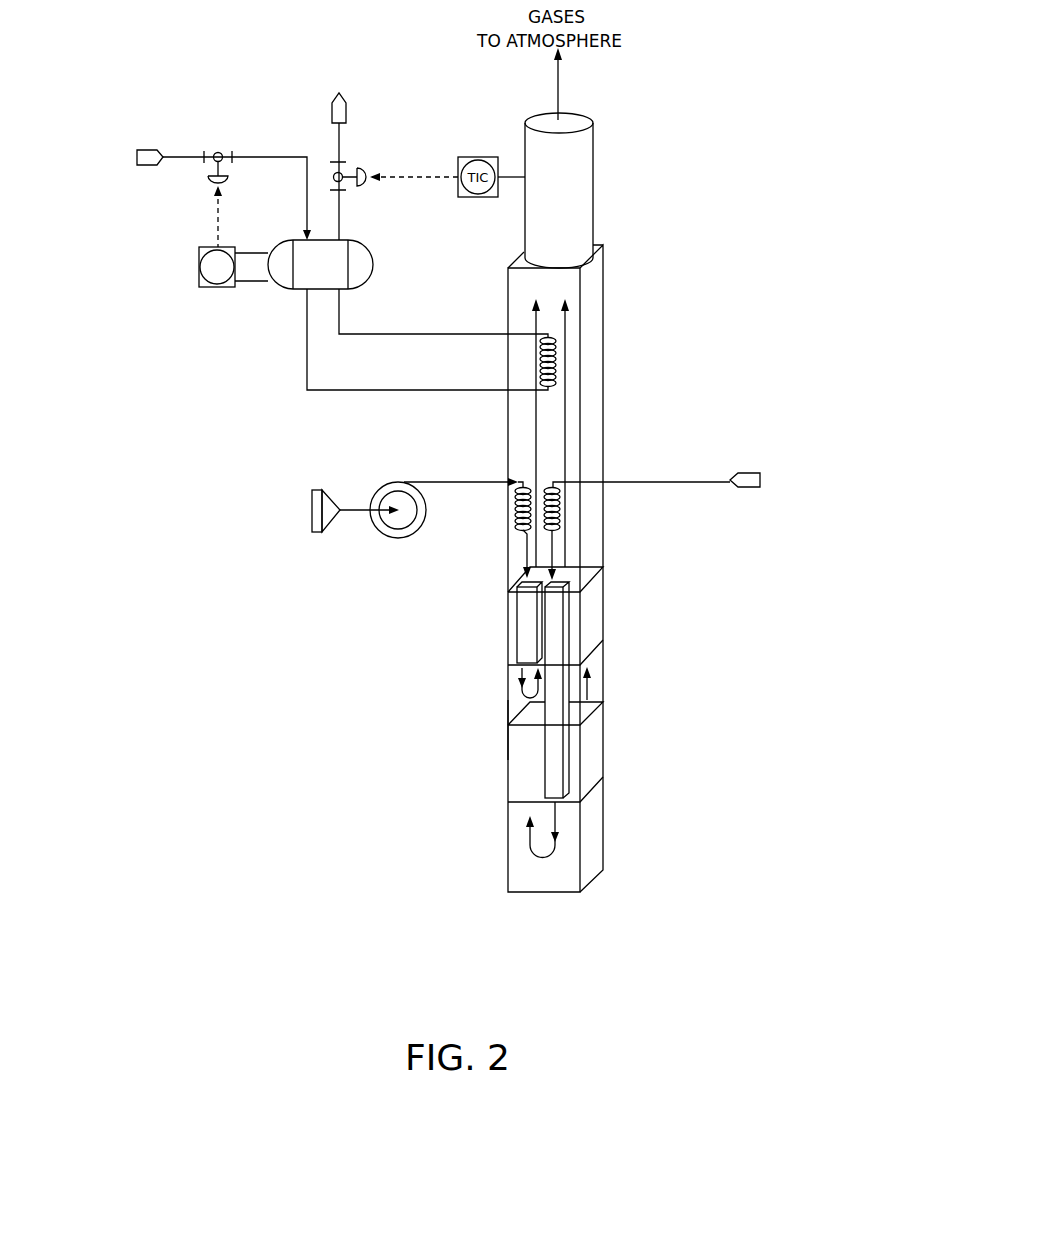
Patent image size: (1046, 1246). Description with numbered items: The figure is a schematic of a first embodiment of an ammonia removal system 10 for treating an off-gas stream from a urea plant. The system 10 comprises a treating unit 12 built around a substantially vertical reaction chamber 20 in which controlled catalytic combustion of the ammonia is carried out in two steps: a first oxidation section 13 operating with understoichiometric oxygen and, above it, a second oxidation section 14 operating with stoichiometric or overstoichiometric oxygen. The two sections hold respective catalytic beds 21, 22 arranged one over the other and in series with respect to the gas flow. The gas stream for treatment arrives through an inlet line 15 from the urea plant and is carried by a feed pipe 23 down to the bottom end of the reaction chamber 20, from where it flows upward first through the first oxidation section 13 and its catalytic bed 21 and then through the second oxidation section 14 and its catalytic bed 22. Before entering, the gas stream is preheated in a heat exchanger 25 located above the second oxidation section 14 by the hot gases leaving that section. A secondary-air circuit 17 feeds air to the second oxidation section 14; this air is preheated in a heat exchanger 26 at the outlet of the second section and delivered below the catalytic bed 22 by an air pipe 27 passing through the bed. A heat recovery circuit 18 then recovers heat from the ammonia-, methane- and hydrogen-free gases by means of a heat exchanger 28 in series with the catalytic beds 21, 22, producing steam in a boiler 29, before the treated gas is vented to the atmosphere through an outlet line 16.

The system 10 is at (690, 124).
The treating unit 12 is at (470, 688).
The first oxidation section 13 is at (517, 777).
The second oxidation section 14 is at (600, 612).
The inlet line 15 is at (678, 479).
The outlet line 16 is at (560, 88).
The secondary-air circuit 17 is at (452, 479).
The heat recovery circuit 18 is at (220, 100).
The reaction chamber 20 is at (598, 683).
The catalytic bed 21 is at (598, 770).
The catalytic bed 22 is at (514, 610).
The feed pipe 23 is at (555, 748).
The heat exchanger 25 is at (560, 510).
The heat exchanger 26 is at (518, 524).
The air pipe 27 is at (525, 640).
The heat exchanger 28 is at (557, 370).
The boiler 29 is at (345, 292).